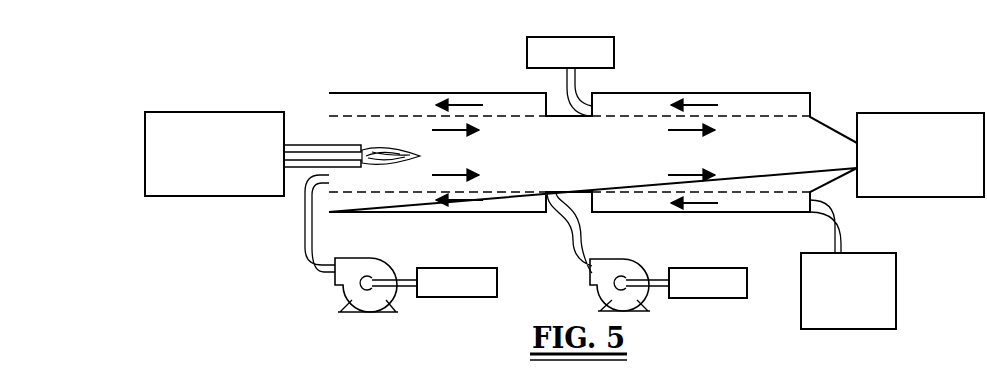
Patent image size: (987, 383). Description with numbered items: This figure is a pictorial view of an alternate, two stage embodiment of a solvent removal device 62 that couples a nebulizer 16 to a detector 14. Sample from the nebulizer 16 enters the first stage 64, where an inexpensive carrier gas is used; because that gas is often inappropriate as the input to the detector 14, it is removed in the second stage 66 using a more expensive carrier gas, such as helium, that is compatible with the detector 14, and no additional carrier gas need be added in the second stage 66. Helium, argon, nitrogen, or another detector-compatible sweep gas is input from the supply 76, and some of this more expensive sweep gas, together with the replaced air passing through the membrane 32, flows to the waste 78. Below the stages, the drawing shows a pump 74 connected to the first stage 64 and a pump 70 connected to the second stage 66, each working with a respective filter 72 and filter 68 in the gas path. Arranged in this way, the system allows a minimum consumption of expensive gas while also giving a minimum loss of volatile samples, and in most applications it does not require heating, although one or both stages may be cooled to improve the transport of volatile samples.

The detector 14 is at (898, 113).
The nebulizer 16 is at (235, 112).
The membrane 32 is at (380, 115).
The desolvation apparatus 62 is at (535, 290).
The first chamber 64 is at (433, 82).
The second stage 66 is at (727, 82).
The filter 68 is at (735, 299).
The pump 70 is at (648, 292).
The filter 72 is at (437, 298).
The pump 74 is at (340, 290).
The supply 76 is at (896, 288).
The waste 78 is at (606, 37).